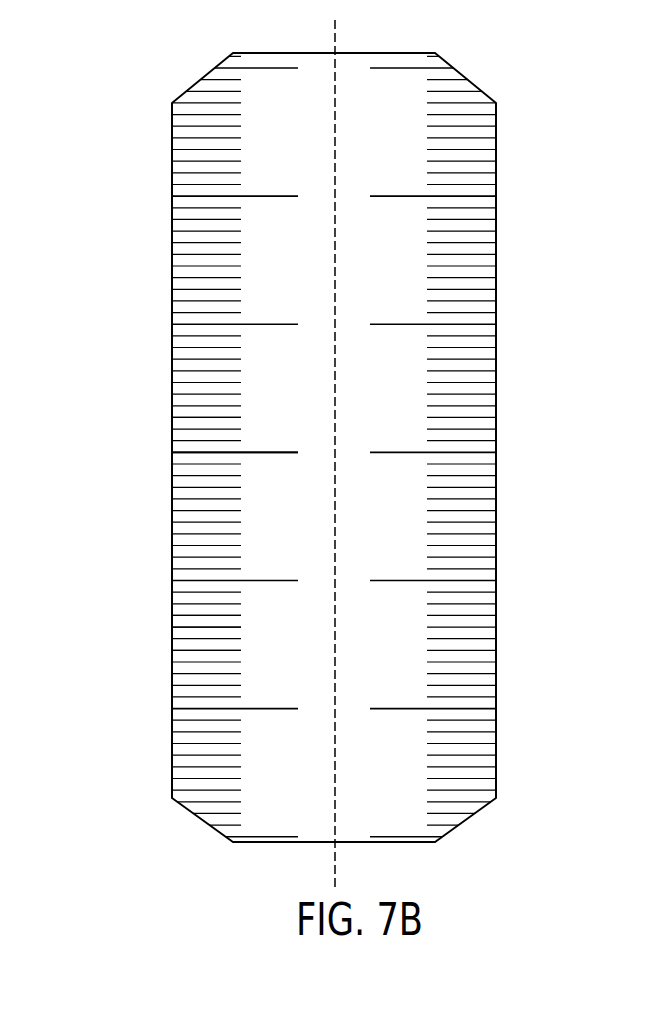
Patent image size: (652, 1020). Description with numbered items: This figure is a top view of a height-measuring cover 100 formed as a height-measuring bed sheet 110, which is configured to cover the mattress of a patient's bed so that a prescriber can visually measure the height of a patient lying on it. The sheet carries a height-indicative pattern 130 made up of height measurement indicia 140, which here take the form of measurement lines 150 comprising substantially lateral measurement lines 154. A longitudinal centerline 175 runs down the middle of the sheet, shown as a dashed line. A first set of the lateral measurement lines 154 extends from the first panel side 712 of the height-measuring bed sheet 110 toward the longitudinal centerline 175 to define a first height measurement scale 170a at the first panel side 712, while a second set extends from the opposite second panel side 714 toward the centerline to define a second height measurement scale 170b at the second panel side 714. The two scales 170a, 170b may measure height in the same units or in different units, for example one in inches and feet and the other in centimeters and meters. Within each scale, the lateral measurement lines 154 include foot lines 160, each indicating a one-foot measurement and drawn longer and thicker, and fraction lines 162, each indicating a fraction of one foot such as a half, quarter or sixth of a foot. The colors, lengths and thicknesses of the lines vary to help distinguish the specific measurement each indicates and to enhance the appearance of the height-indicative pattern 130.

The height-measuring cover 100 is at (146, 123).
The height-measuring bed sheet 110 is at (292, 445).
The longitudinal centerline 175 is at (337, 46).
The first height measurement scale 170a is at (152, 254).
The second height measurement scale 170b is at (542, 186).
The height-indicative pattern 130 is at (400, 393).
The height measurement indicia 140 is at (458, 535).
The measurement lines 150 is at (205, 452).
The substantially lateral measurement lines 154 is at (475, 557).
The foot lines 160 is at (263, 708).
The fraction lines 162 is at (208, 628).
The first panel side 712 is at (172, 528).
The second panel side 714 is at (497, 418).